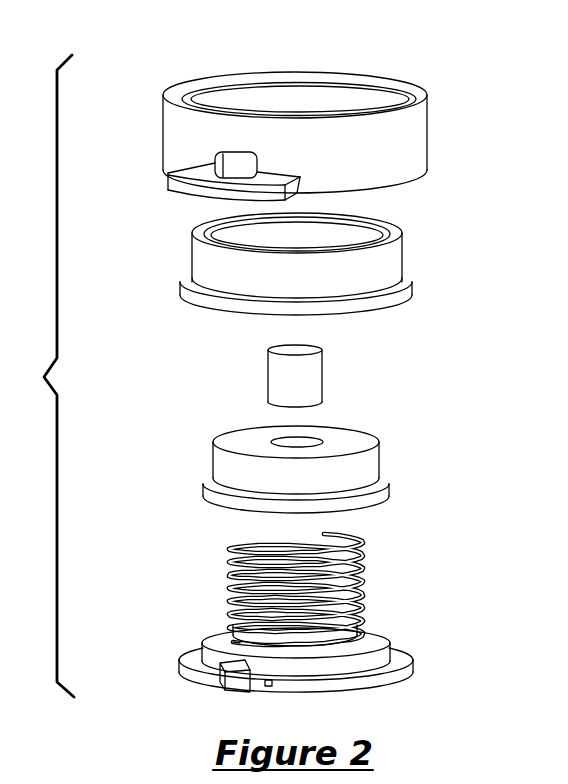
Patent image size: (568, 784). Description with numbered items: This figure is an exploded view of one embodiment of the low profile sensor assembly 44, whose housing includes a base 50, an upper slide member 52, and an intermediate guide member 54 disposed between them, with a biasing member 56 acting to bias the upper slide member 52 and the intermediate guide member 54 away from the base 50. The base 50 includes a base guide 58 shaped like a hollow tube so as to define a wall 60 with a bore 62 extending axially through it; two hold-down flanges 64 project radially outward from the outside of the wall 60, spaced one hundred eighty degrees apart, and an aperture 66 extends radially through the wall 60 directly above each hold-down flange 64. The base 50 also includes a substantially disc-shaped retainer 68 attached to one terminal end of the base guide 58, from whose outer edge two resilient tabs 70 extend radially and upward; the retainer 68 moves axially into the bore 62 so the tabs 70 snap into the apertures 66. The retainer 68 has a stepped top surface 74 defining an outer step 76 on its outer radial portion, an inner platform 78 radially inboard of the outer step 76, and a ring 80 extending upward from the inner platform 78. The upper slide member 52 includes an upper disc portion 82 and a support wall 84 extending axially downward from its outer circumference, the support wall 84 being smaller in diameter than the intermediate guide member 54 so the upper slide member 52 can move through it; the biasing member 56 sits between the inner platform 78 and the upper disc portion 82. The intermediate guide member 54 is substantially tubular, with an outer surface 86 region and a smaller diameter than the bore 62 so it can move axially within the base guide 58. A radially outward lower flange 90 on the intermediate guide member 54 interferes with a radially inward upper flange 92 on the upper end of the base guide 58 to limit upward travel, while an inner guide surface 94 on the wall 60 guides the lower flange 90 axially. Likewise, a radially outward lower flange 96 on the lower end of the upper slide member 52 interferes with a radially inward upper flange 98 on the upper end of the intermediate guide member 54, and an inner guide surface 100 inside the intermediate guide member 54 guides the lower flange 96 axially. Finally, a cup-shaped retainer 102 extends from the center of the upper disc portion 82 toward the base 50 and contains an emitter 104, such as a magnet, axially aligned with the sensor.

The low profile sensor assembly 44 is at (41, 376).
The base 50 is at (418, 140).
The upper slide member 52 is at (360, 467).
The intermediate guide member 54 is at (396, 262).
The biasing member 56 is at (366, 576).
The base guide 58 is at (414, 116).
The wall 60 is at (418, 160).
The bore 62 is at (283, 70).
The hold-down flange 64 is at (184, 188).
The aperture 66 is at (230, 161).
The retainer 68 is at (355, 683).
The resilient tab 70 is at (227, 672).
The top surface 74 is at (372, 642).
The outer step 76 is at (393, 667).
The inner platform 78 is at (217, 643).
The ring 80 is at (237, 632).
The upper disc portion 82 is at (355, 438).
The support wall 84 is at (232, 467).
The cup wall 86 is at (334, 284).
The lower flange 90 is at (387, 298).
The upper flange 92 is at (357, 87).
The inner guide surface 94 is at (284, 109).
The lower flange 96 is at (208, 490).
The upper flange 98 is at (368, 226).
The inner guide surface 100 is at (338, 236).
The retainer 102 is at (292, 440).
The emitter 104 is at (323, 375).